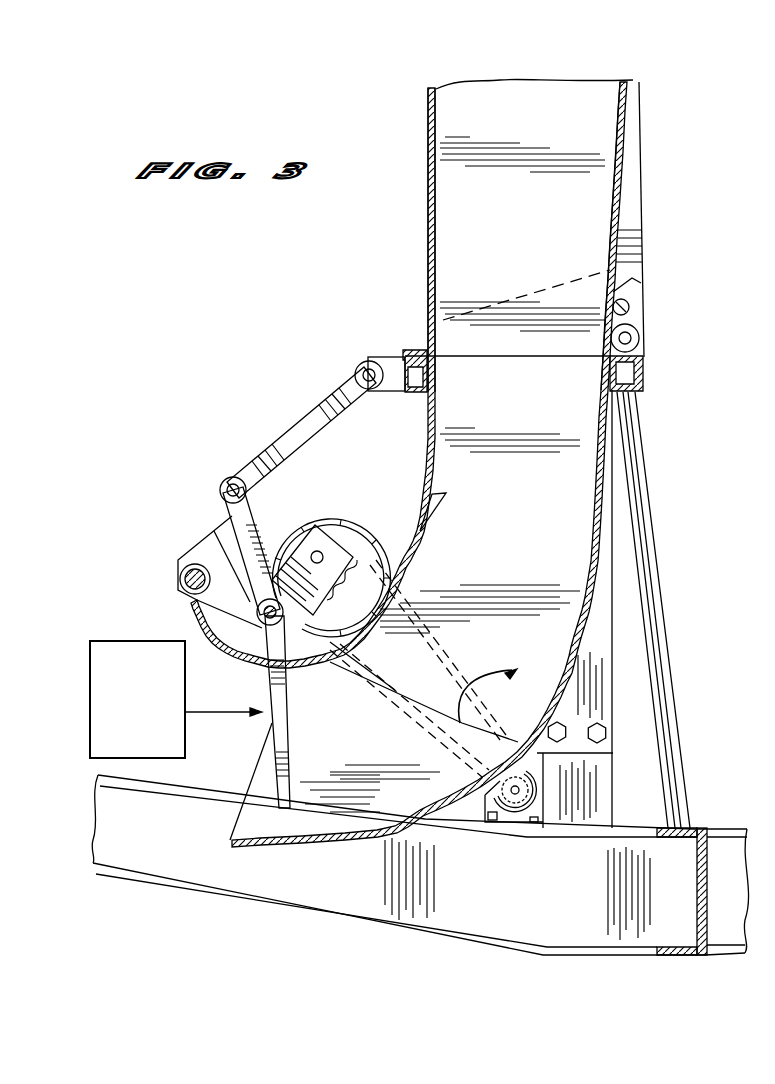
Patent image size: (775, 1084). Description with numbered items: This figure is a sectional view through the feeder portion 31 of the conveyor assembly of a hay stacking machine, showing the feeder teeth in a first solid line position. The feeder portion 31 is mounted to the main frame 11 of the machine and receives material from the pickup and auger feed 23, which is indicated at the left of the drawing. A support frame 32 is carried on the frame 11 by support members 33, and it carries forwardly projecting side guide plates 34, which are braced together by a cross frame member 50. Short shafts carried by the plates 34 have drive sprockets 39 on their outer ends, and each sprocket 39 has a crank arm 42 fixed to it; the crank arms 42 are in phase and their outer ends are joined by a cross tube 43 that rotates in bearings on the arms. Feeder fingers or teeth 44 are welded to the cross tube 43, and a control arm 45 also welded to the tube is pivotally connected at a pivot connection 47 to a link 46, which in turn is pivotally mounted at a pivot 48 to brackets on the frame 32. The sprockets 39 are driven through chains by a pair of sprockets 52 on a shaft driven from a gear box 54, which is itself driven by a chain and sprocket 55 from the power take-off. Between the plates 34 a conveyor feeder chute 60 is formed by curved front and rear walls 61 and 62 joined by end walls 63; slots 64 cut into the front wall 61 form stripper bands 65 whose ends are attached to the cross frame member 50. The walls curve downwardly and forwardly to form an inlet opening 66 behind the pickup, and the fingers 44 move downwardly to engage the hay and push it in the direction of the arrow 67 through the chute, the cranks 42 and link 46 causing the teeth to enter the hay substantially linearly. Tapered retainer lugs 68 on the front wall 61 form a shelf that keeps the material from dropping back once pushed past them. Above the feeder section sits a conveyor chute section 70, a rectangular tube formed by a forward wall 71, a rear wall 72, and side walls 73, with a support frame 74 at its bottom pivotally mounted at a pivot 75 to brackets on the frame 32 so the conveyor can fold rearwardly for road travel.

The frame 11 is at (525, 922).
The hay pickup 23 is at (130, 641).
The feeder portion 31 is at (576, 565).
The support frame 32 is at (417, 392).
The support members 33 is at (663, 610).
The side guide plates 34 is at (327, 452).
The drive sprockets 39 is at (292, 543).
The crank arm 42 is at (330, 553).
The cross tube 43 is at (242, 647).
The feeder fingers 44 is at (285, 772).
The control arm 45 is at (235, 517).
The link 46 is at (327, 413).
The pivot connection 47 is at (232, 480).
The pivot 48 is at (369, 362).
The cross frame member 50 is at (195, 579).
The sprockets 52 is at (523, 808).
The gear box 54 is at (482, 808).
The chain and sprocket 55 is at (530, 787).
The conveyor feeder chute 60 is at (600, 677).
The front wall 61 is at (433, 478).
The rear wall 62 is at (573, 670).
The end walls 63 is at (585, 442).
The slots 64 is at (397, 590).
The stripper bands 65 is at (327, 660).
The inlet opening 66 is at (240, 768).
The arrow 67 is at (488, 685).
The tapered retainer lugs 68 is at (435, 512).
The conveyor chute section 70 is at (630, 221).
The forward wall 71 is at (428, 223).
The rear wall 72 is at (623, 117).
The side walls 73 is at (465, 110).
The support frame 74 is at (422, 345).
The pivot 75 is at (637, 337).